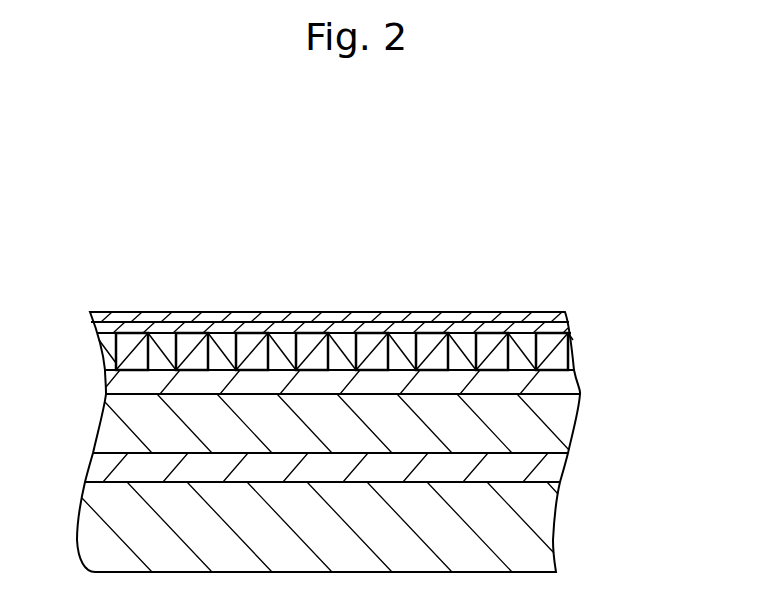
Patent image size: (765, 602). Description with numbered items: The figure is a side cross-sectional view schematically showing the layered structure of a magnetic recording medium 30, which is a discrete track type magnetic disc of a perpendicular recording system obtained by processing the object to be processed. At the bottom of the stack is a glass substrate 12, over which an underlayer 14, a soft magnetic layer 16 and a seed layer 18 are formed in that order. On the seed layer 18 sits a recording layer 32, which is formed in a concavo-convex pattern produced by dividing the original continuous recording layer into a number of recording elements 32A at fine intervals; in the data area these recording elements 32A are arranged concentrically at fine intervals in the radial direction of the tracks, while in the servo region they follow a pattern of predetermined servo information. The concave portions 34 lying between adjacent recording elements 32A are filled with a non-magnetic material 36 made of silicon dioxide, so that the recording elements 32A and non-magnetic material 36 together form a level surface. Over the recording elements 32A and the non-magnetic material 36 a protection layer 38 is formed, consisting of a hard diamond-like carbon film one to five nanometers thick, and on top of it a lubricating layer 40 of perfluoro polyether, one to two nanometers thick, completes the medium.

The magnetic recording medium 30 is at (334, 172).
The glass substrate 12 is at (555, 514).
The underlayer 14 is at (567, 460).
The soft magnetic layer 16 is at (582, 413).
The seed layer 18 is at (579, 382).
The recording layer 32 is at (365, 296).
The recording elements 32A is at (340, 347).
The concave portions 34 is at (250, 343).
The non-magnetic material 36 is at (370, 342).
The protection layer 38 is at (571, 328).
The lubricating layer 40 is at (567, 313).